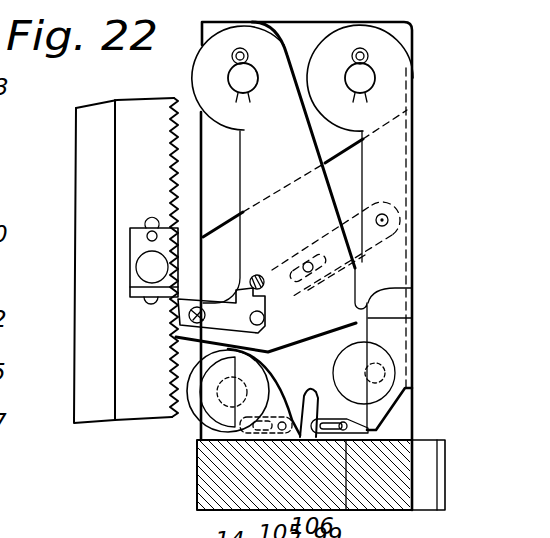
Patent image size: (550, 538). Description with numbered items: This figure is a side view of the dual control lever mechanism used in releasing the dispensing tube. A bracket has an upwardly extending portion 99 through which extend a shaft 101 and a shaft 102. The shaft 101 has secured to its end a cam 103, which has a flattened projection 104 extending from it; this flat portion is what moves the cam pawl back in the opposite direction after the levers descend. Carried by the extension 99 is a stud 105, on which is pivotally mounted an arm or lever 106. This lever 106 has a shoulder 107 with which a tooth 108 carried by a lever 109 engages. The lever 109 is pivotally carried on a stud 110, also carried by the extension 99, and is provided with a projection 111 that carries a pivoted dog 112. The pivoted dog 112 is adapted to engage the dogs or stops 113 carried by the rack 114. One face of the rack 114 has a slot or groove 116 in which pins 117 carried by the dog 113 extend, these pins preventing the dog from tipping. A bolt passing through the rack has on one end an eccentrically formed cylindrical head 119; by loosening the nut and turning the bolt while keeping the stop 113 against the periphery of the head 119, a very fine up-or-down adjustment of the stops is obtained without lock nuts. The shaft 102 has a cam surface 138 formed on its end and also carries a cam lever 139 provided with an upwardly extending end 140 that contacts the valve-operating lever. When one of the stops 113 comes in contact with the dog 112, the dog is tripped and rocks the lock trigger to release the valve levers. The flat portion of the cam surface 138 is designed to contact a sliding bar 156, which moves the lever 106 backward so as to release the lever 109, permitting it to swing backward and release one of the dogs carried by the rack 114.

The upwardly extending portion 99 is at (400, 33).
The shaft 101 is at (388, 372).
The shaft 102 is at (227, 403).
The cam 103 is at (336, 372).
The flattened projection 104 is at (372, 350).
The stud 105 is at (375, 72).
The arm or lever 106 is at (400, 135).
The shoulder 107 is at (410, 290).
The tooth 108 is at (412, 316).
The lever 109 is at (274, 157).
The stud 110 is at (230, 70).
The projection 111 is at (176, 336).
The pivoted dog 112 is at (246, 278).
The dogs or stops 113 is at (133, 292).
The rack 114 is at (147, 118).
The slot or groove 116 is at (148, 219).
The pins 117 is at (148, 234).
The eccentrically formed cylindrical head 119 is at (138, 266).
The cam surface 138 is at (226, 370).
The cam lever 139 is at (262, 398).
The upwardly extending end 140 is at (281, 438).
The sliding bar 156 is at (350, 510).